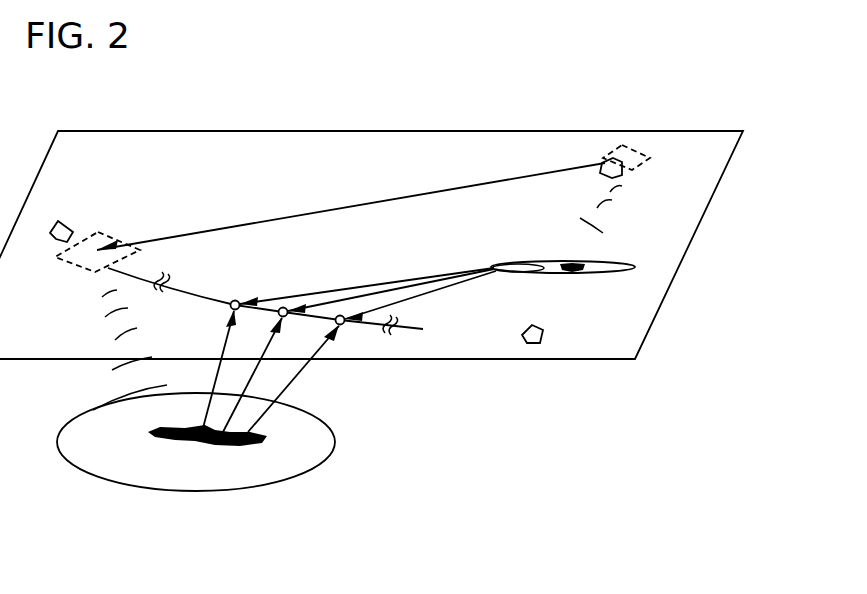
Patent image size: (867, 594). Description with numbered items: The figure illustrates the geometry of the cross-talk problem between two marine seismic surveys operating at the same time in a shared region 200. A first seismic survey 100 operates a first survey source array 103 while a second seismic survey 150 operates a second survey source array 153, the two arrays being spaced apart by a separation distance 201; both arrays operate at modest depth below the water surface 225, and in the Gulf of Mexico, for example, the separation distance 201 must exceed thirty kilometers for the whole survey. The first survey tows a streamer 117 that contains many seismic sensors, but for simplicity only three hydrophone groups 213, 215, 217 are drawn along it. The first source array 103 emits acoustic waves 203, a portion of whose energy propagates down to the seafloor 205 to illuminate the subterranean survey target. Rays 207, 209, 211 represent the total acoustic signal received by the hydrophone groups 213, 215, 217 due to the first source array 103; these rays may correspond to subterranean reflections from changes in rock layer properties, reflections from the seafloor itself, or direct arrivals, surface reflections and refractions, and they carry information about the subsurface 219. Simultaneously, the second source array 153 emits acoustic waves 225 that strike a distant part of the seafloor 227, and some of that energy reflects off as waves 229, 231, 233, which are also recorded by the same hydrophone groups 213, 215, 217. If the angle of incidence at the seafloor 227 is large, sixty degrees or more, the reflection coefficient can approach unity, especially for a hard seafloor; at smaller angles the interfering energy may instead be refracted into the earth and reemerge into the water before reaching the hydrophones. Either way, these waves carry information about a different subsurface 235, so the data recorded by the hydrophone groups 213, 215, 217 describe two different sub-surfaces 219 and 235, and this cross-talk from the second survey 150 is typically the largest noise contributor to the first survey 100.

The first seismic survey 100 is at (118, 167).
The second seismic survey 150 is at (650, 111).
The operating environment 200 is at (478, 523).
The first survey source array 103 is at (108, 233).
The second survey source array 153 is at (640, 154).
The separation distance 201 is at (322, 212).
The streamer 117 is at (190, 293).
The hydrophone group 213 is at (238, 300).
The hydrophone group 215 is at (288, 306).
The hydrophone group 217 is at (342, 325).
The ray 207 is at (220, 343).
The ray 209 is at (268, 347).
The ray 211 is at (295, 378).
The acoustic waves 203 is at (115, 337).
The seafloor 205 is at (327, 462).
The subsurface 219 is at (195, 443).
The acoustic waves 225 is at (608, 206).
The seafloor 227 is at (588, 273).
The subsurface 235 is at (585, 263).
The wave 229 is at (367, 286).
The wave 231 is at (400, 295).
The wave 233 is at (430, 298).